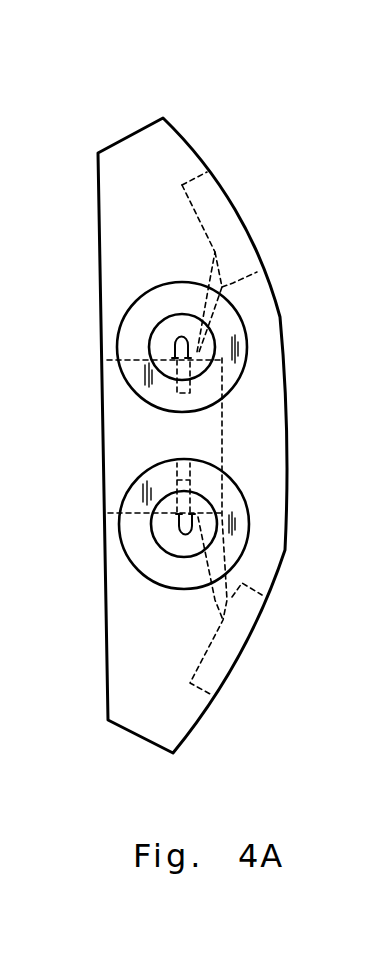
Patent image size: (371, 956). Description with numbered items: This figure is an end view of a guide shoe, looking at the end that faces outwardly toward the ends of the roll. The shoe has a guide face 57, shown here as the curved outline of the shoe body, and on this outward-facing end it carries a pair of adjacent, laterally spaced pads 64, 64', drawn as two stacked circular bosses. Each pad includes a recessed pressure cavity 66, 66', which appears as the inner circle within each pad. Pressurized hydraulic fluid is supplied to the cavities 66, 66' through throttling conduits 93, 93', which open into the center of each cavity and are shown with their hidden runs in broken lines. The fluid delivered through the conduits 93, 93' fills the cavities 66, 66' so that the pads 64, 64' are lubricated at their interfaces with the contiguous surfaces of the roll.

The guide face 57 is at (190, 145).
The pad 64 is at (148, 306).
The recessed pressure cavity 66 is at (127, 331).
The throttling conduit 93 is at (259, 310).
The pad 64' is at (144, 517).
The recessed pressure cavity 66' is at (124, 551).
The throttling conduit 93' is at (263, 539).